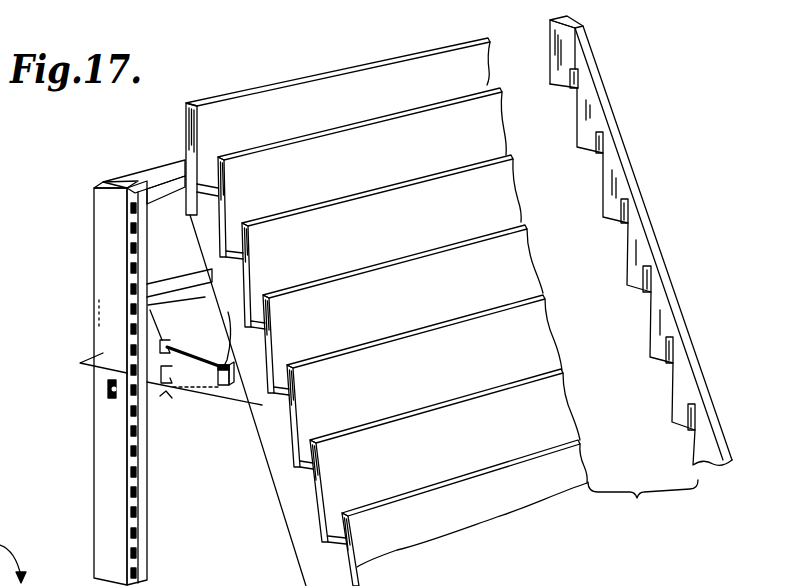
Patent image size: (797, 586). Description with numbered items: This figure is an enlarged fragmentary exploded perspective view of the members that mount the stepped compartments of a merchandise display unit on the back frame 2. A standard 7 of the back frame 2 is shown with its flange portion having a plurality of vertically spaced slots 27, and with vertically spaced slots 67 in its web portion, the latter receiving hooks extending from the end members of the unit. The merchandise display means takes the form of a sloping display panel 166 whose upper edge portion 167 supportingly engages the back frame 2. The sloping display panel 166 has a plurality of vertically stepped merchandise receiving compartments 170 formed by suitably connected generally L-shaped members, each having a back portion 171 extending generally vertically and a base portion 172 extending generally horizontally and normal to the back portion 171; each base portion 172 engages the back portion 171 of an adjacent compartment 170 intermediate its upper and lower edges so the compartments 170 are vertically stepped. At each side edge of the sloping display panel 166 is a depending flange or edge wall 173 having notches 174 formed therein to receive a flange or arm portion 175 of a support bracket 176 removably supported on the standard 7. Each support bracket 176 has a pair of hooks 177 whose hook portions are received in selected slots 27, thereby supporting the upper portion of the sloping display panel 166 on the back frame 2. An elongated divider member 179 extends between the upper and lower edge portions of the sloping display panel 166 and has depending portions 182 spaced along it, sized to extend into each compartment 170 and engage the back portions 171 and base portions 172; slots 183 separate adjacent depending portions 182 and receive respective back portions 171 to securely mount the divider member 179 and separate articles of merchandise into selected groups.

The back frame 2 is at (90, 282).
The standard 7 is at (100, 538).
The vertically spaced slots 27 is at (140, 535).
The vertically spaced slots 67 is at (106, 399).
The sloping display panel 166 is at (338, 126).
The upper edge portion 167 is at (348, 68).
The merchandise receiving compartments 170 is at (211, 160).
The back portion 171 is at (481, 66).
The base portion 172 is at (214, 198).
The flange or edge wall 173 is at (298, 520).
The notches 174 is at (208, 302).
The flange or arm portion 175 is at (228, 334).
The support bracket 176 is at (202, 382).
The hooks 177 is at (160, 347).
The elongated divider member 179 is at (629, 106).
The depending portions 182 is at (583, 147).
The slots 183 is at (576, 88).